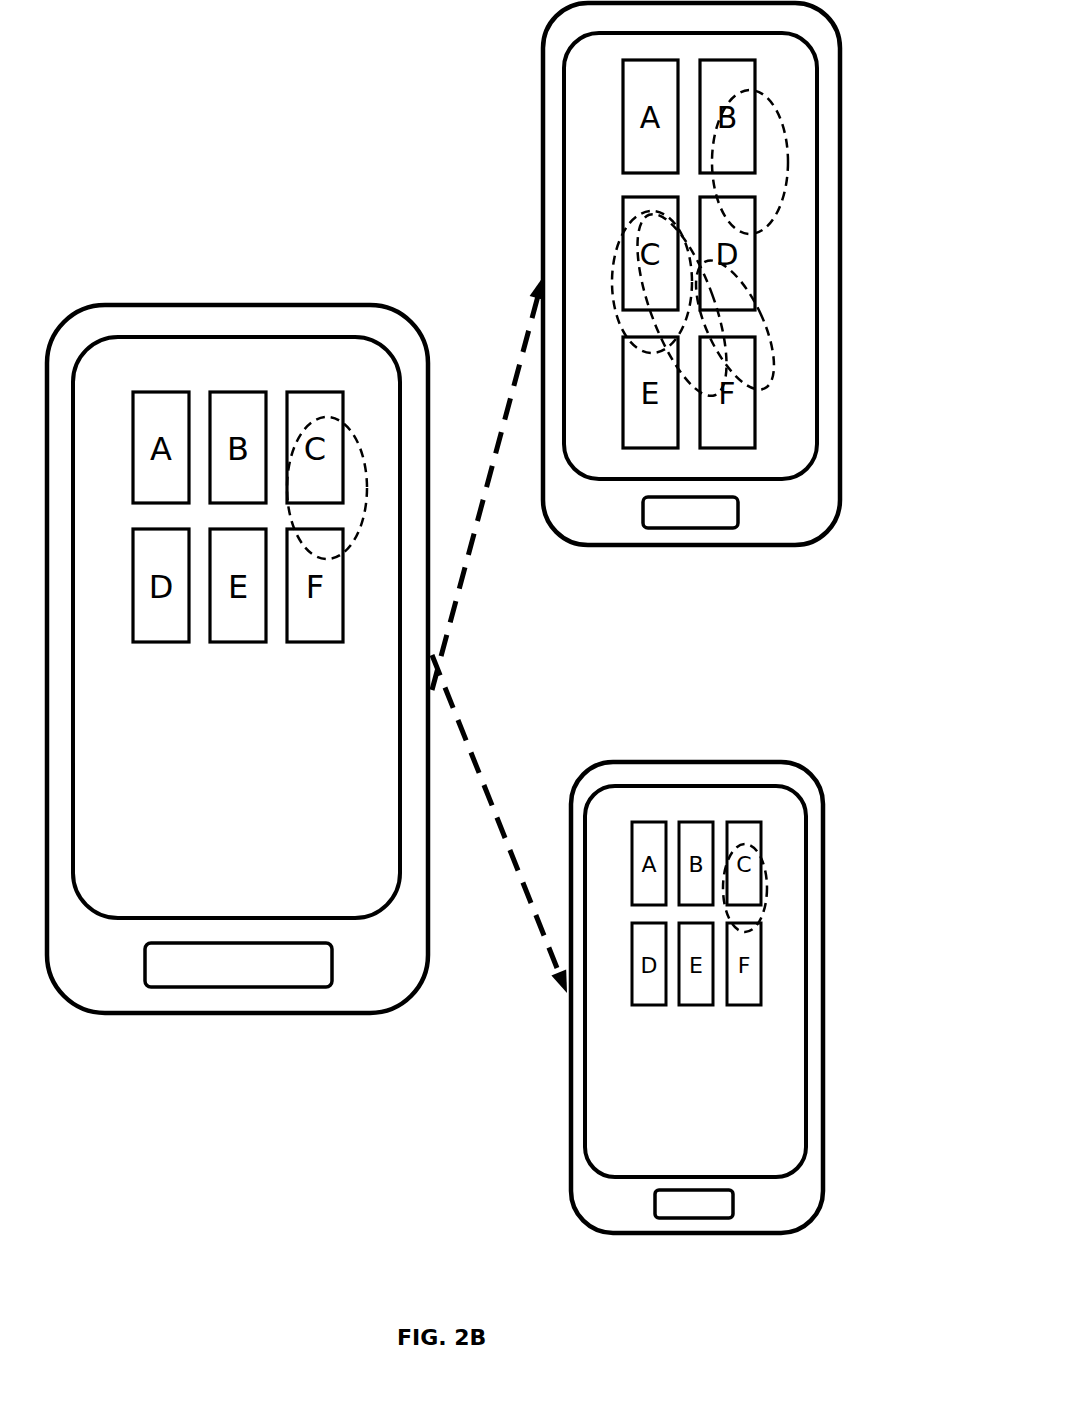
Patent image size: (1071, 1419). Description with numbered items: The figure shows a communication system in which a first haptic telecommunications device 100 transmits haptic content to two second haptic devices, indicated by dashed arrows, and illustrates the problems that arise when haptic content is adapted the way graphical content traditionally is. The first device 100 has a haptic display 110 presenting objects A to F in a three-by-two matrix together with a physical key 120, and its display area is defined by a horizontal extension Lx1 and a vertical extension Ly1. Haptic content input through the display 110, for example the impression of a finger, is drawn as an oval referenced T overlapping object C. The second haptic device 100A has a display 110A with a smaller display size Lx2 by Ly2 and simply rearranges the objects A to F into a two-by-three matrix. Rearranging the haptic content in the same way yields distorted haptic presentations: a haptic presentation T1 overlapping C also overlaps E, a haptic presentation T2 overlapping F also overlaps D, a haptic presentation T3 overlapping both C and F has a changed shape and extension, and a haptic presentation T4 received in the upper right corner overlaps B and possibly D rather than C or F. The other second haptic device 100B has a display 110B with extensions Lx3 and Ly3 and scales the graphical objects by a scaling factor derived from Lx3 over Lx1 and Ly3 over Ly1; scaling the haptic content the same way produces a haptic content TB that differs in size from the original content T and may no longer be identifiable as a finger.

The haptic telecommunications device 100 is at (222, 1015).
The haptic display 110 is at (100, 916).
The physical keys 120 is at (157, 988).
The haptic content T is at (350, 430).
The second haptic device 100A is at (688, 545).
The display 110A is at (603, 485).
The haptic presentation T1 is at (610, 292).
The haptic presentation T2 is at (753, 272).
The haptic presentation T3 is at (745, 322).
The haptic presentation T4 is at (780, 107).
The second haptic device 100B is at (722, 1233).
The display 110B is at (612, 1180).
The haptic content TB is at (765, 862).
The horizontal extension Lx1 is at (147, 894).
The vertical extension Ly1 is at (101, 844).
The horizontal extension Lx2 is at (623, 467).
The vertical extension Ly2 is at (592, 411).
The horizontal extension Lx3 is at (645, 1151).
The vertical extension Ly3 is at (612, 1110).